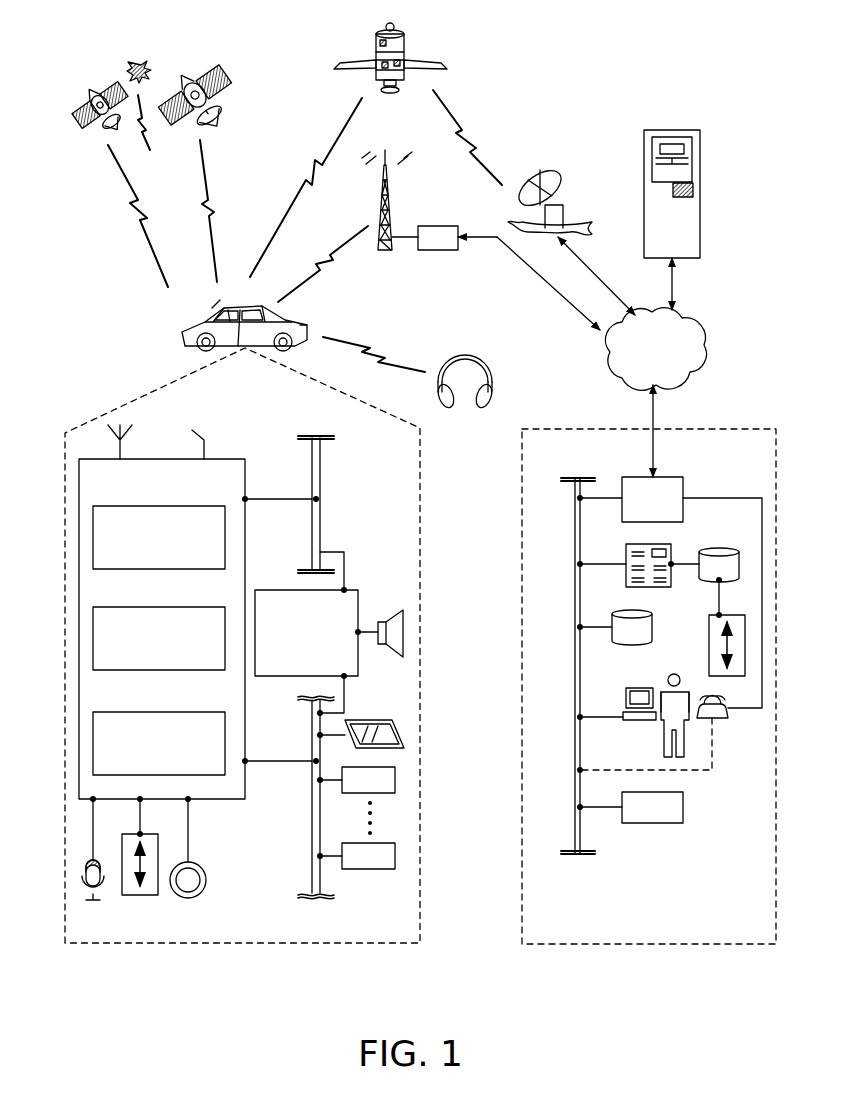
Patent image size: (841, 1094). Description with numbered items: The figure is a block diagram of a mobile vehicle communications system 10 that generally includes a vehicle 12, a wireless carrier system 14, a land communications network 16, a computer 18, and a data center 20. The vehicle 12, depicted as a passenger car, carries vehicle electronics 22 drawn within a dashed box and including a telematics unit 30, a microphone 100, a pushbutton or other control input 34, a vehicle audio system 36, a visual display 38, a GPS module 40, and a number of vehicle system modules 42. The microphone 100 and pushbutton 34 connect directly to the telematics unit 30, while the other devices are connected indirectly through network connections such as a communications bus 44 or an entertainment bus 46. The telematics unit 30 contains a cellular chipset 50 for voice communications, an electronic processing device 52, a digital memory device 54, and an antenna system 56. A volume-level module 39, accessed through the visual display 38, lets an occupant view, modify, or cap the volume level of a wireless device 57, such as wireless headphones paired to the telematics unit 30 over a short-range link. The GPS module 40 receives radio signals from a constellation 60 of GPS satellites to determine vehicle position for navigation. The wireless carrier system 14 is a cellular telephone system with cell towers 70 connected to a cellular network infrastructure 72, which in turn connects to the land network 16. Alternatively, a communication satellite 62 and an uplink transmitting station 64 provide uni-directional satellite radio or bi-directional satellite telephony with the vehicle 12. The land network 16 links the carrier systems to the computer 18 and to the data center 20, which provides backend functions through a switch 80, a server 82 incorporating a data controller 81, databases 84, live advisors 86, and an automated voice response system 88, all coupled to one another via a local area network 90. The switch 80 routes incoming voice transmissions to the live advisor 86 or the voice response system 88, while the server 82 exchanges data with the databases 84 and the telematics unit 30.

The mobile vehicle communications system 10 is at (598, 70).
The vehicle 12 is at (185, 335).
The wireless carrier system 14 is at (377, 258).
The land communications network 16 is at (706, 352).
The computer 18 is at (672, 130).
The data center 20 is at (648, 946).
The vehicle electronics 22 is at (228, 945).
The telematics unit 30 is at (206, 452).
The pushbutton 34 is at (207, 878).
The vehicle audio system 36 is at (346, 588).
The visual display 38 is at (370, 722).
The volume-level module 39 is at (140, 896).
The GPS module 40 is at (396, 786).
The vehicle system modules 42 is at (396, 860).
The communications bus 44 is at (306, 883).
The entertainment bus 46 is at (322, 472).
The cellular chipset 50 is at (93, 540).
The electronic processing device 52 is at (93, 640).
The digital memory device 54 is at (93, 740).
The antenna system 56 is at (118, 455).
The wireless device 57 is at (493, 378).
The constellation of GPS satellites 60 is at (232, 147).
The communication satellite 62 is at (402, 43).
The uplink transmitting station 64 is at (577, 218).
The cell tower 70 is at (392, 196).
The cellular network infrastructure 72 is at (445, 250).
The switch 80 is at (684, 488).
The data controller 81 is at (720, 548).
The server 82 is at (626, 558).
The database 84 is at (653, 626).
The live advisor 86 is at (665, 745).
The automated voice response system 88 is at (684, 806).
The local area network 90 is at (582, 840).
The microphone 100 is at (85, 884).